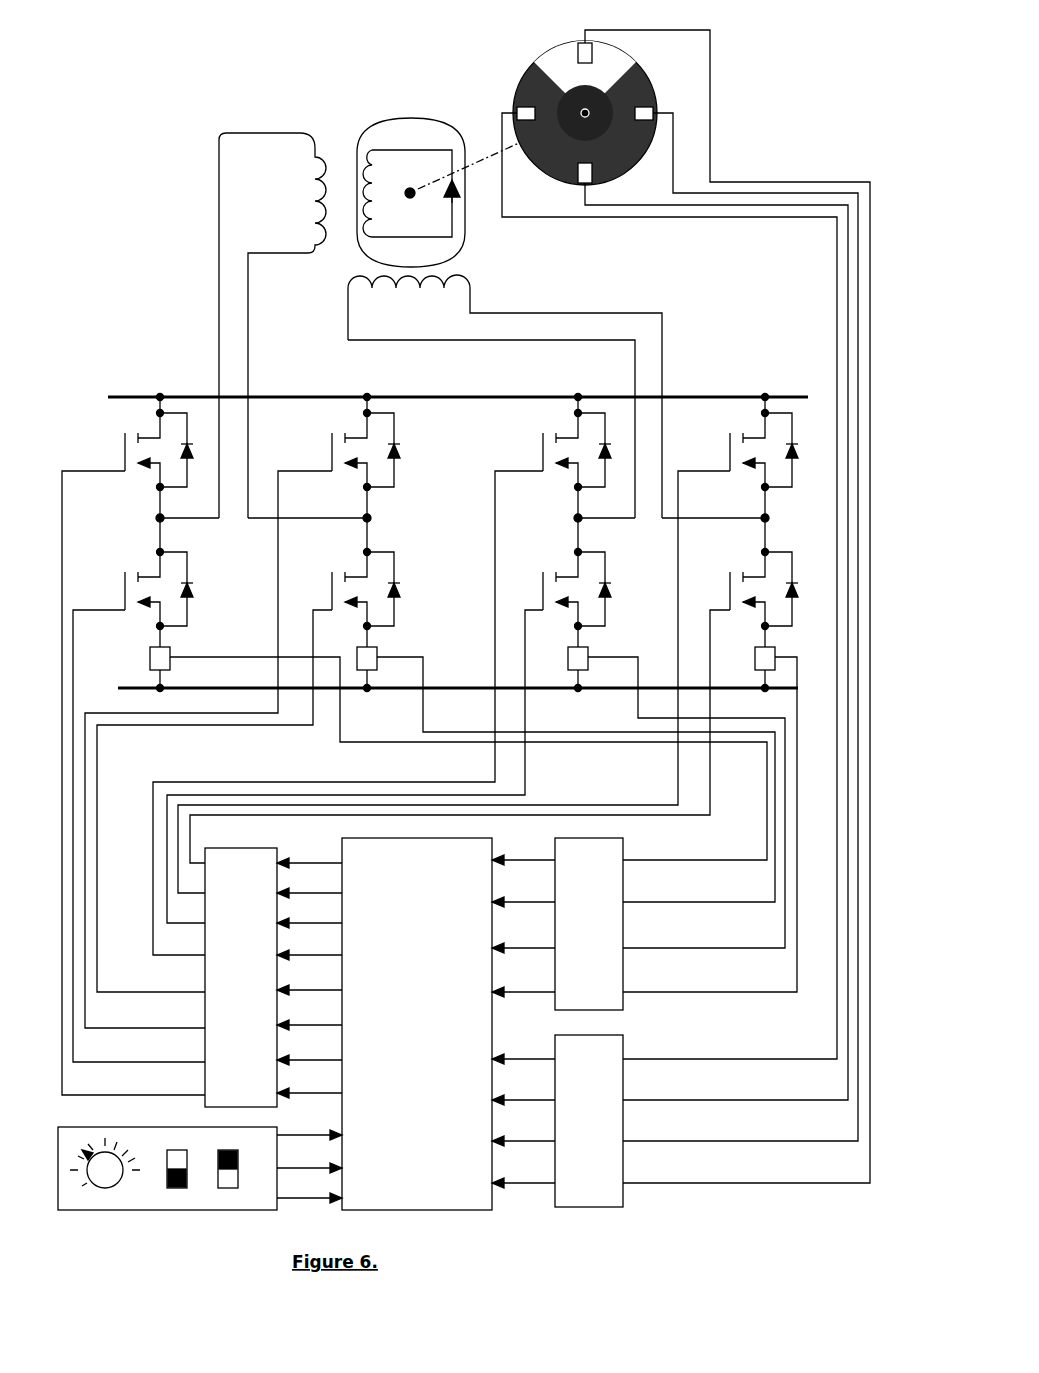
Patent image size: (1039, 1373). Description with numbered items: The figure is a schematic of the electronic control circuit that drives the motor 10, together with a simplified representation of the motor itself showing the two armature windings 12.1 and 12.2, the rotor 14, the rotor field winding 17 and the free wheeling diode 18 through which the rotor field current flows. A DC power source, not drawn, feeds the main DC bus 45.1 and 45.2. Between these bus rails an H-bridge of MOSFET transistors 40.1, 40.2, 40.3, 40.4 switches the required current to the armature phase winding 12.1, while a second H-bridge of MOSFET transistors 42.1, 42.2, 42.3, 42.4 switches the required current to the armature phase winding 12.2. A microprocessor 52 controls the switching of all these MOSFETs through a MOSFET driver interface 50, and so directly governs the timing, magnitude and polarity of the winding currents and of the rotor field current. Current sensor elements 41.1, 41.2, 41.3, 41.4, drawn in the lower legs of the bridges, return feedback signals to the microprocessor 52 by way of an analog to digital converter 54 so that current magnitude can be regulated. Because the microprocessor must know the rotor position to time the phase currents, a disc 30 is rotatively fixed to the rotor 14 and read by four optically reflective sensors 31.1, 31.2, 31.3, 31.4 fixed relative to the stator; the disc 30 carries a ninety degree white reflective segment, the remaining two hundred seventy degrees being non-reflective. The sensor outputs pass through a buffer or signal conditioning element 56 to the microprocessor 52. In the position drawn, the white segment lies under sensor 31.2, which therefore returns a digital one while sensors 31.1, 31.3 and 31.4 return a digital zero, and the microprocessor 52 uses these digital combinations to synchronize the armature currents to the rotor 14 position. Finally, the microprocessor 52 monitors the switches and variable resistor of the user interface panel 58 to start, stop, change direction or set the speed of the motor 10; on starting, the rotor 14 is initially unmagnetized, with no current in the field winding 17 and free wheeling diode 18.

The motor 10 is at (350, 90).
The armature winding 12.1 is at (272, 325).
The armature winding 12.2 is at (505, 396).
The rotor 14 is at (417, 127).
The rotor field winding 17 is at (370, 193).
The free wheeling diode 18 is at (448, 197).
The disc 30 is at (528, 90).
The optically reflective sensor 31.1 is at (520, 112).
The optically reflective sensor 31.2 is at (582, 46).
The optically reflective sensor 31.3 is at (648, 112).
The optically reflective sensor 31.4 is at (578, 181).
The MOSFET transistor 40.1 is at (133, 745).
The MOSFET transistor 40.2 is at (242, 711).
The MOSFET transistor 40.3 is at (139, 806).
The MOSFET transistor 40.4 is at (248, 771).
The current sensor element 41.1 is at (458, 745).
The current sensor element 41.2 is at (566, 766).
The current sensor element 41.3 is at (638, 789).
The current sensor element 41.4 is at (644, 811).
The MOSFET transistor 42.1 is at (382, 675).
The MOSFET transistor 42.2 is at (488, 644).
The MOSFET transistor 42.3 is at (389, 736).
The MOSFET transistor 42.4 is at (494, 706).
The main DC bus 45.1 is at (120, 396).
The main DC bus 45.2 is at (119, 687).
The MOSFET driver interface 50 is at (241, 977).
The microprocessor 52 is at (384, 1024).
The analog to digital converter 54 is at (589, 924).
The signal conditioning element 56 is at (589, 1121).
The user interface panel 58 is at (118, 1213).